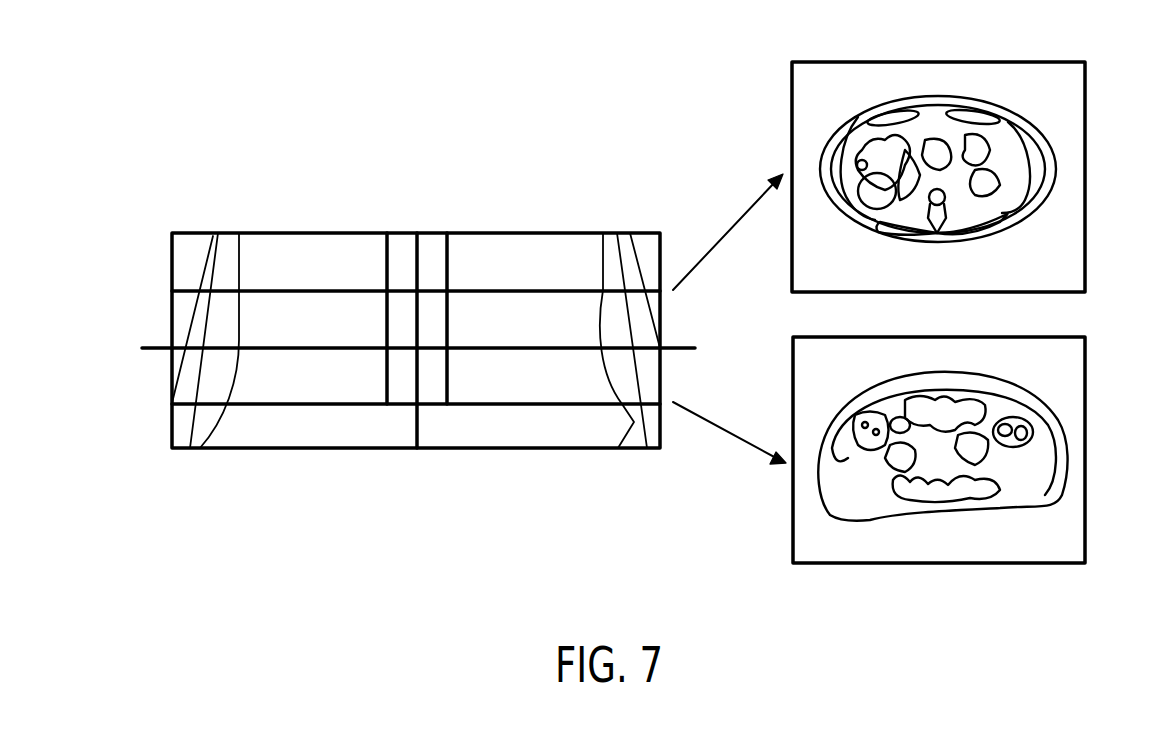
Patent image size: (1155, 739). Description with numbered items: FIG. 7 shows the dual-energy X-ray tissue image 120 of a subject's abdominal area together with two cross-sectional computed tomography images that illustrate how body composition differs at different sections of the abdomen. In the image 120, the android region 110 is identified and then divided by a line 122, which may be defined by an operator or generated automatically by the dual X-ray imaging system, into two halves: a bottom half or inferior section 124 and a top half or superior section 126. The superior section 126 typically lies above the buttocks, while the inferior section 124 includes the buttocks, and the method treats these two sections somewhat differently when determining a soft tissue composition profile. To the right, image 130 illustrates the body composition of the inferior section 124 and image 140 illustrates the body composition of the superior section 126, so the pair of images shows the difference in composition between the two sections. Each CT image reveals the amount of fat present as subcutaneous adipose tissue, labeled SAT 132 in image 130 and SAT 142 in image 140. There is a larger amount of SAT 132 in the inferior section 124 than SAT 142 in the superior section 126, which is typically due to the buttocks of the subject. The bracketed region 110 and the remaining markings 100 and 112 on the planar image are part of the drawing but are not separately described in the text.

The image data / body scan projection 100 is at (523, 404).
The android region 110 is at (142, 295).
The slice 112 is at (312, 291).
The image 120 is at (138, 426).
The line 122 is at (677, 346).
The inferior section 124 is at (317, 388).
The superior section 126 is at (320, 331).
The image 130 is at (879, 591).
The subcutaneous adipose tissue (SAT) 132 is at (1015, 393).
The image 140 is at (858, 50).
The subcutaneous adipose tissue (SAT) 142 is at (972, 105).